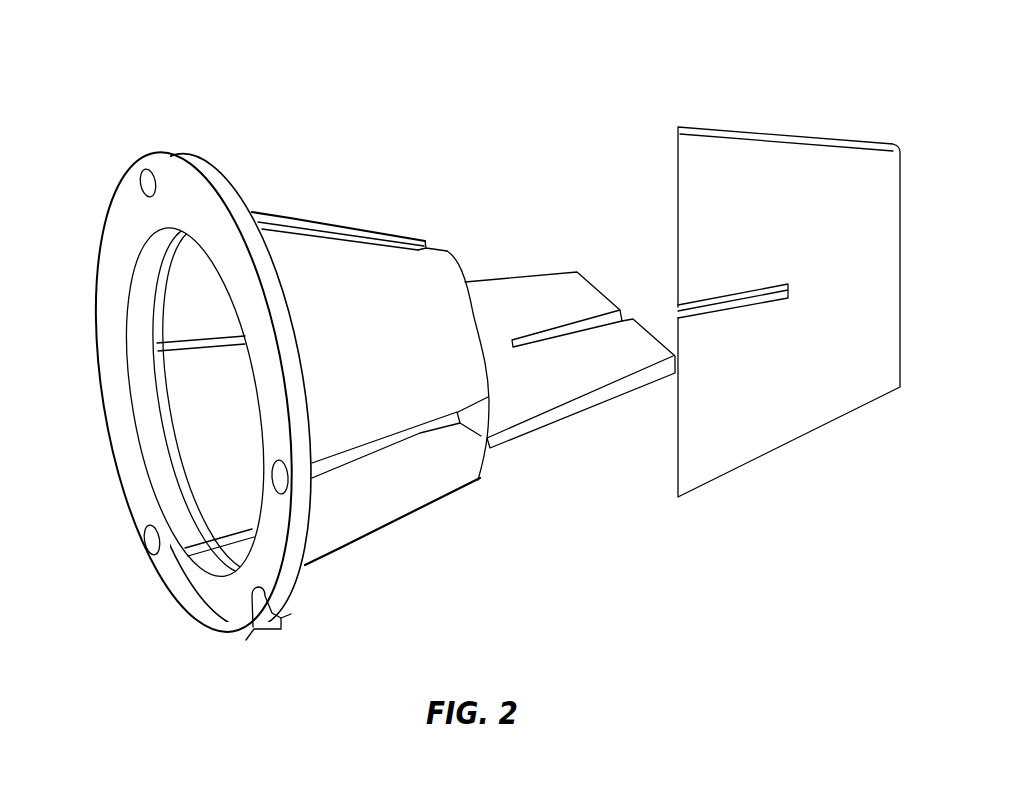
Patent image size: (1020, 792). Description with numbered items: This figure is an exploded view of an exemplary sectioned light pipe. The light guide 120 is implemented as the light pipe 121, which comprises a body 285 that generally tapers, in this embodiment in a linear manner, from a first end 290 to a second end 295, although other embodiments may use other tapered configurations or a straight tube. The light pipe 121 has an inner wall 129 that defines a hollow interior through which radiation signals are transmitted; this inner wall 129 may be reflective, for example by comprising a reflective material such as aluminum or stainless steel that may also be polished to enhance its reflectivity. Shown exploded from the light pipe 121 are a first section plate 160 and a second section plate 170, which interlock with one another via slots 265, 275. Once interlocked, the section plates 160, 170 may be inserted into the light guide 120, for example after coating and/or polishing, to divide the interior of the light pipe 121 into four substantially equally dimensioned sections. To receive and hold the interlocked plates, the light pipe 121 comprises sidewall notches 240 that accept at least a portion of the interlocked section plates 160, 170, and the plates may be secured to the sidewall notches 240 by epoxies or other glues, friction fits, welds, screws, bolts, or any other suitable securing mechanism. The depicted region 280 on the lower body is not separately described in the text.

The light guide 120 is at (331, 118).
The light pipe 121 is at (324, 562).
The inner wall 129 is at (202, 468).
The first section plate 160 is at (796, 440).
The second section plate 170 is at (554, 381).
The sidewall notches 240 is at (280, 220).
The slot 265 is at (744, 292).
The slot 275 is at (584, 322).
The lower body portion 280 is at (354, 518).
The body 285 is at (351, 259).
The first end 290 is at (256, 206).
The second end 295 is at (439, 230).